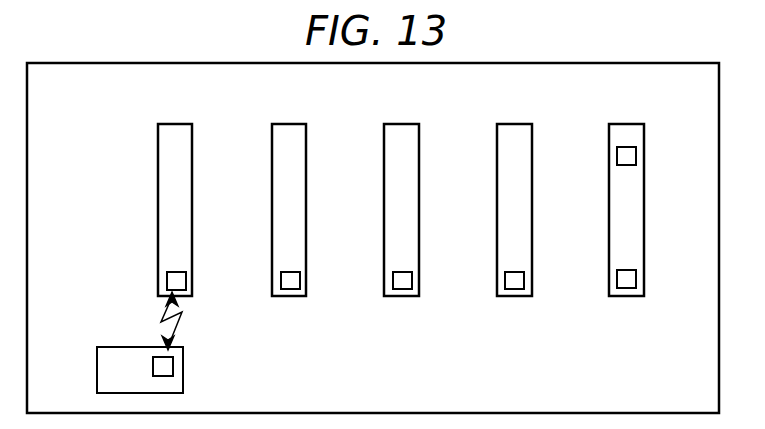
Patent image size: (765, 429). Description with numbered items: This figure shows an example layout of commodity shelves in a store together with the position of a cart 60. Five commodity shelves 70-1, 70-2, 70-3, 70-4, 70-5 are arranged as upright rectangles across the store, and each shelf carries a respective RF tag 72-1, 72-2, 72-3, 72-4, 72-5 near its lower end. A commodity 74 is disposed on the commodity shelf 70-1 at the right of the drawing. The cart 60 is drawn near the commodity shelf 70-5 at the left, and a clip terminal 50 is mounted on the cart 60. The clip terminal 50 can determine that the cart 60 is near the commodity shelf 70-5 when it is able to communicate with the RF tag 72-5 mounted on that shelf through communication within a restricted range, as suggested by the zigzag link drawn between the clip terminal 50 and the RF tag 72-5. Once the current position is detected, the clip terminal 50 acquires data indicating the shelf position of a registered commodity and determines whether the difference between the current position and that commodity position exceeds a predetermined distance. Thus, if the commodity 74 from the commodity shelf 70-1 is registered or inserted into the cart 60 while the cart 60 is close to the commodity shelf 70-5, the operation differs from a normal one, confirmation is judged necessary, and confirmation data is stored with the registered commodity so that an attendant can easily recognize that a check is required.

The commodity shelf 70-1 is at (627, 124).
The commodity shelf 70-2 is at (515, 124).
The commodity shelf 70-3 is at (402, 124).
The commodity shelf 70-4 is at (289, 124).
The commodity shelf 70-5 is at (176, 124).
The RF tag 72-1 is at (627, 297).
The RF tag 72-2 is at (514, 297).
The RF tag 72-3 is at (402, 297).
The RF tag 72-4 is at (290, 297).
The RF tag 72-5 is at (166, 282).
The commodity 74 is at (617, 155).
The clip terminal 50 is at (153, 365).
The cart 60 is at (183, 367).